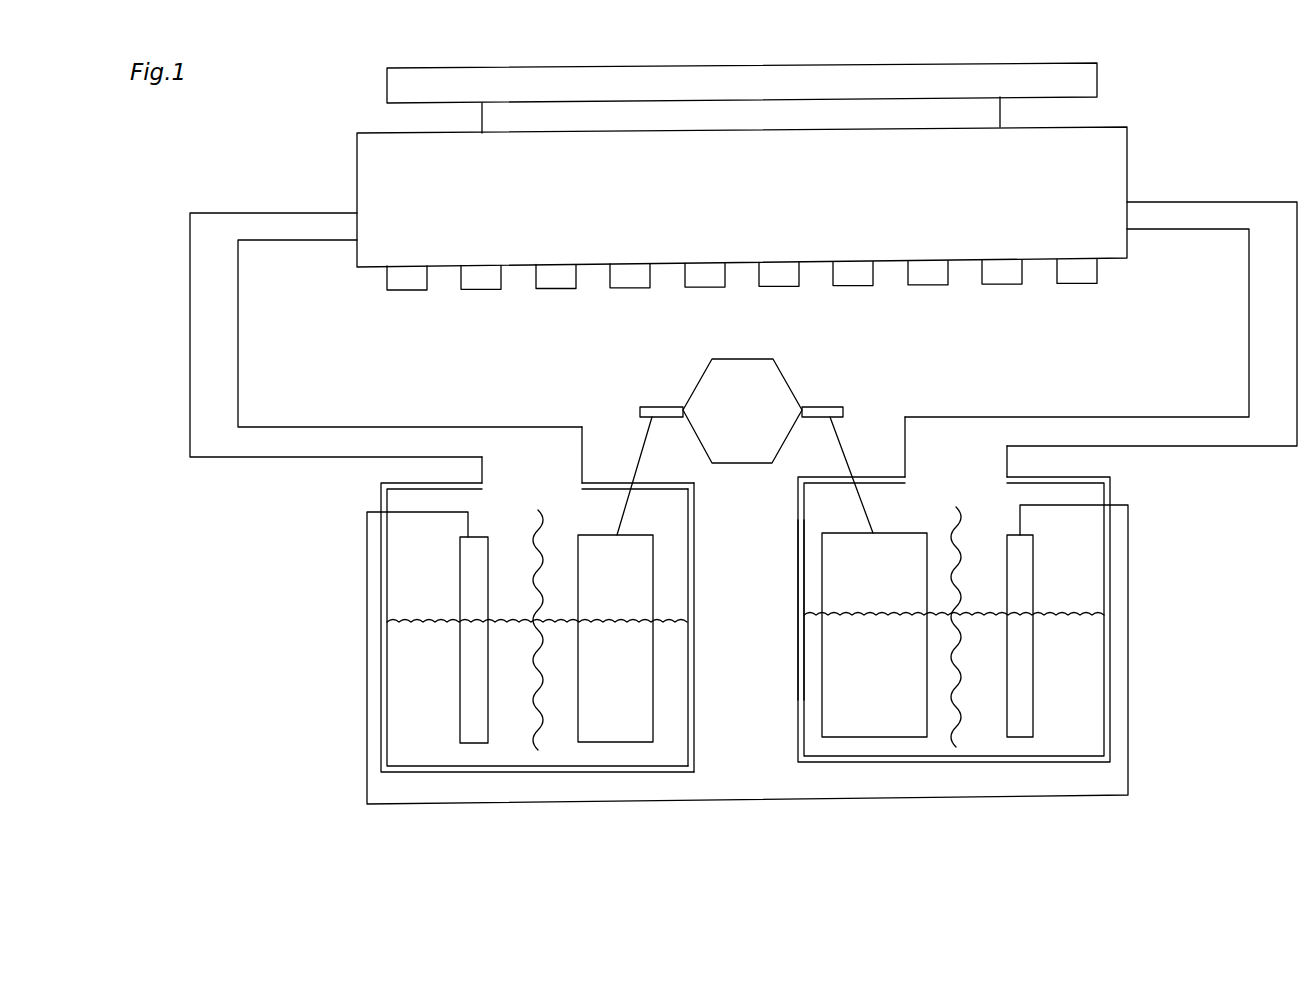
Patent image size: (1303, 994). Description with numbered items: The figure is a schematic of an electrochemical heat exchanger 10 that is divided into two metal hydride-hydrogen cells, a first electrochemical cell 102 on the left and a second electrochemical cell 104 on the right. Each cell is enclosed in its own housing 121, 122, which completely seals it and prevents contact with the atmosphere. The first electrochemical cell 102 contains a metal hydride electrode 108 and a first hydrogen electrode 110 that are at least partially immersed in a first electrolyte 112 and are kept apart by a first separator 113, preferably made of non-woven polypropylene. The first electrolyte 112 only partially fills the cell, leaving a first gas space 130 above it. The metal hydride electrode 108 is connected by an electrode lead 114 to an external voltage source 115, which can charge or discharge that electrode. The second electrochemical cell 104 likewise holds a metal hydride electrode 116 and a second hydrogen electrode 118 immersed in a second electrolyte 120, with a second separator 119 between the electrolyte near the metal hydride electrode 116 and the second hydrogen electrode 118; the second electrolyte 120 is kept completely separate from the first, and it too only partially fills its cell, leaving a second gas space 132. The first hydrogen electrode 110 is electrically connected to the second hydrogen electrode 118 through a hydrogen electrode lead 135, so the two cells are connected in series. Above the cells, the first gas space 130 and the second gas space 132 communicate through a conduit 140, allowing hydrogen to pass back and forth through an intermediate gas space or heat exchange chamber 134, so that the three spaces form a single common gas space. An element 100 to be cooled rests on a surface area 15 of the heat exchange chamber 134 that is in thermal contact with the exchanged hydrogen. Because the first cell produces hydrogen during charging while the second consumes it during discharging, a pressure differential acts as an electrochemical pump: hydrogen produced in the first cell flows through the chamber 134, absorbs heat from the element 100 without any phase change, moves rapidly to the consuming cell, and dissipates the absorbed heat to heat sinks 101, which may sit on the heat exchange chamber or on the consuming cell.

The electrochemical heat exchanger 10 is at (298, 195).
The surface area 15 is at (975, 110).
The element to be cooled 100 is at (722, 64).
The heat sink 101 is at (1077, 273).
The first electrochemical cell 102 is at (398, 572).
The second electrochemical cell 104 is at (1078, 695).
The metal hydride electrode 108 is at (613, 720).
The first hydrogen electrode 110 is at (470, 733).
The first electrolyte 112 is at (667, 635).
The first separator 113 is at (530, 740).
The electrode lead 114 is at (643, 448).
The external voltage source 115 is at (760, 425).
The metal hydride electrode 116 is at (865, 713).
The second hydrogen electrode 118 is at (1018, 725).
The second separator 119 is at (940, 740).
The second electrolyte 120 is at (1088, 648).
The housing 121 is at (693, 733).
The housing 122 is at (797, 668).
The first gas space 130 is at (535, 455).
The second gas space 132 is at (953, 468).
The heat exchange chamber 134 is at (758, 224).
The hydrogen electrode lead 135 is at (792, 800).
The conduit 140 is at (190, 340).